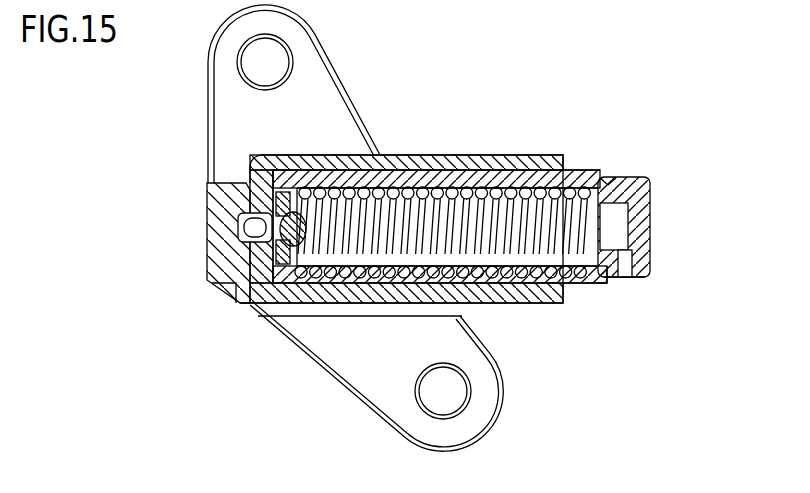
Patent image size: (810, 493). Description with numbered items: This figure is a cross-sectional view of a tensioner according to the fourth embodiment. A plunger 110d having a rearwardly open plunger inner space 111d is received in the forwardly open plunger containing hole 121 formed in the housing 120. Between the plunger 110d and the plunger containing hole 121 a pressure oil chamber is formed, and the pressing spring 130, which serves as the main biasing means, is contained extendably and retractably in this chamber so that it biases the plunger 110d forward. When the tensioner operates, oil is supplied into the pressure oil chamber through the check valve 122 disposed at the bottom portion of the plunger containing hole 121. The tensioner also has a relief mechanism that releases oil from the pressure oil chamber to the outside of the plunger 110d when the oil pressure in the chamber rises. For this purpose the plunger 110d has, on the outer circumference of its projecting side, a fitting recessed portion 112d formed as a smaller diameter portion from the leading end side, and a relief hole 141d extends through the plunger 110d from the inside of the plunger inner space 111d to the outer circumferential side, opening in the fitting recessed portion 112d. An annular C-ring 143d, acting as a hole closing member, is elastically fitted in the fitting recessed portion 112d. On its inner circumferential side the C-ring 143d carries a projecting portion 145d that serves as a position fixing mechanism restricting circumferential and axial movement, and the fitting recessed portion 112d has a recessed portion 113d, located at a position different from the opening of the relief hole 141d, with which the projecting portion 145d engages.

The housing 120 is at (388, 155).
The plunger containing hole 121 is at (318, 272).
The check valve 122 is at (233, 183).
The pressing spring 130 is at (508, 270).
The plunger 110d is at (580, 170).
The plunger inner space 111d is at (422, 225).
The fitting recessed portion 112d is at (610, 283).
The recessed portion 113d is at (630, 174).
The relief hole 141d is at (648, 261).
The C-ring 143d is at (627, 278).
The projecting portion 145d is at (608, 176).